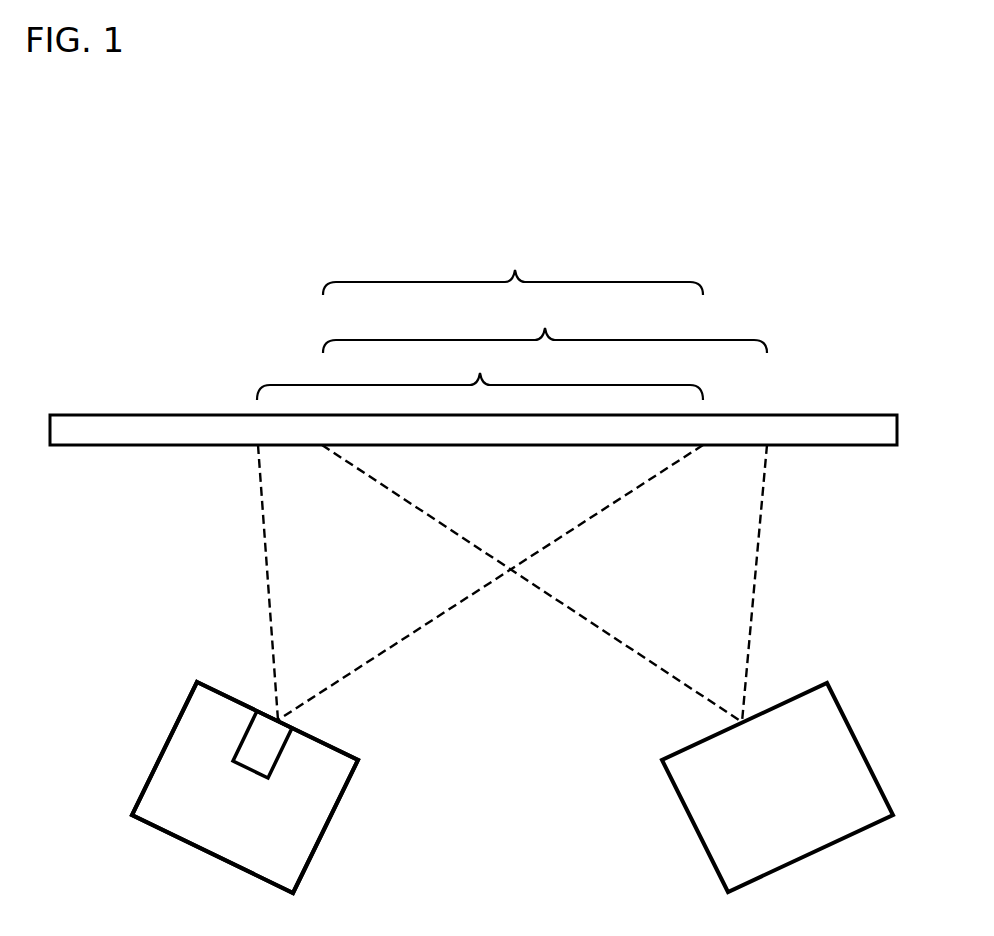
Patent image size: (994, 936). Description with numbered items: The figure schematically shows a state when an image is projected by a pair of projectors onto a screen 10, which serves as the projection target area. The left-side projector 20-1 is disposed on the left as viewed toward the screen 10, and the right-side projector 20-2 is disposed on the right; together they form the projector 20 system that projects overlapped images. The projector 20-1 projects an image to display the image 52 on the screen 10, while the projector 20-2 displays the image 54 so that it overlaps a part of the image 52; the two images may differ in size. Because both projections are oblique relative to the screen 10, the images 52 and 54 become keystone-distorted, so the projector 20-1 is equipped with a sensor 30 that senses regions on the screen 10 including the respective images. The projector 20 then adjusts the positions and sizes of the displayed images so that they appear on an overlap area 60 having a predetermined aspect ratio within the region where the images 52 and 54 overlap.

The screen 10 is at (836, 415).
The projector 20 is at (128, 739).
The left-side projector 20-1 is at (346, 752).
The right-side projector 20-2 is at (830, 690).
The sensor 30 is at (283, 757).
The image 52 is at (480, 372).
The image 54 is at (545, 325).
The overlap area 60 is at (513, 266).